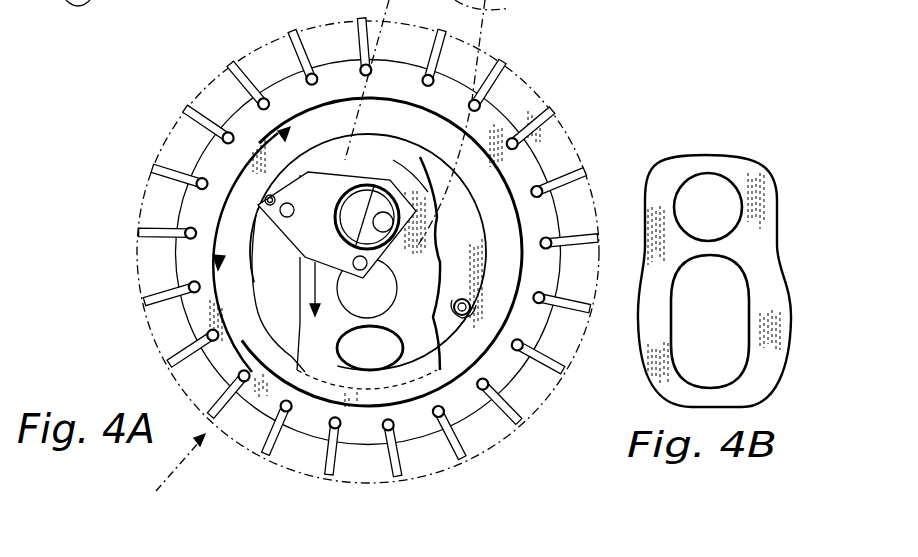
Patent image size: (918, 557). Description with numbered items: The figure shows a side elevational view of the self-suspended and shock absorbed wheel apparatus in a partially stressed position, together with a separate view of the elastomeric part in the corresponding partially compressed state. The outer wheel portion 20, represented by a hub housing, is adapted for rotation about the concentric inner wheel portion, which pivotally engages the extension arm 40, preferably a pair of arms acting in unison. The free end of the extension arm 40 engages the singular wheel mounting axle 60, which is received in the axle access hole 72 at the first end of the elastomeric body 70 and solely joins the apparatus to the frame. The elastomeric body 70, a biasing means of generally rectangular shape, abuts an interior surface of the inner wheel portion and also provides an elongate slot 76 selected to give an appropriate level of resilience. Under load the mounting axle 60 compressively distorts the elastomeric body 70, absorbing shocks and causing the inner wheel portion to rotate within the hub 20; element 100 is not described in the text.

In FIG. 4A, the outer wheel portion 20 is at (190, 213).
In FIG. 4A, the extension arm 40 is at (303, 258).
In FIG. 4A, the wheel mounting axle 60 is at (348, 170).
In FIG. 4A, the elastomeric body 70 is at (420, 274).
In FIG. 4B, the elastomeric body 70 is at (733, 165).
In FIG. 4B, the axle access hole 72 is at (706, 190).
In FIG. 4A, the elongate slot 76 is at (386, 297).
In FIG. 4B, the elongate slot 76 is at (682, 330).
In FIG. 4A, the housing disc 100 is at (497, 190).